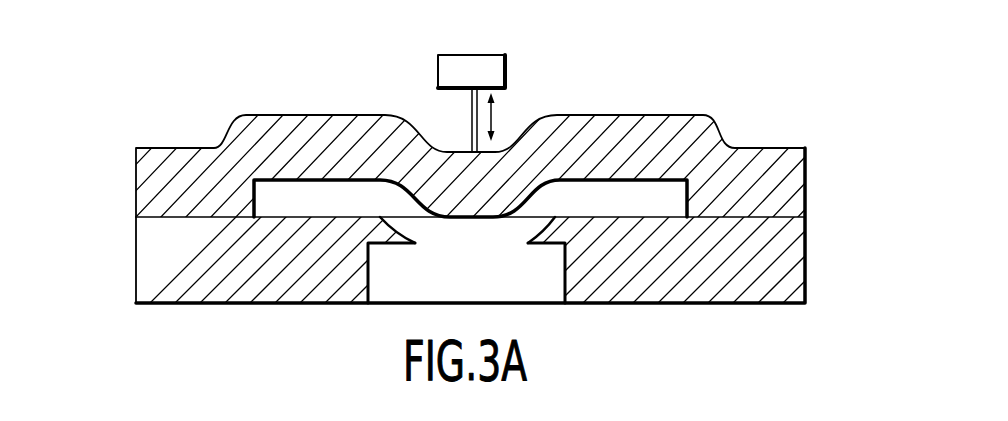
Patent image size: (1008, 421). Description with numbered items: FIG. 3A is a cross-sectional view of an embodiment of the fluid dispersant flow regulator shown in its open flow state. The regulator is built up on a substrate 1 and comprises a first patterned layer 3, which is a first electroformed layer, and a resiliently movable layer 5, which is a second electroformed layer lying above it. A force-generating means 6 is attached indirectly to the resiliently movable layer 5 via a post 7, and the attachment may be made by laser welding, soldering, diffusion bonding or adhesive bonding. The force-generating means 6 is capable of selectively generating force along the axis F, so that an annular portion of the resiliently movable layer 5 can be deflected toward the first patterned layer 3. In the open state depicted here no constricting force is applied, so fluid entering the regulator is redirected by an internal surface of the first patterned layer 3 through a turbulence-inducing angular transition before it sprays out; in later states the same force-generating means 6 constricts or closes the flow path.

The substrate 1 is at (660, 304).
The first patterned layer 3 is at (807, 264).
The resiliently movable layer 5 is at (136, 177).
The force-generating means 6 is at (505, 55).
The post 7 is at (468, 140).
The axis F is at (493, 113).